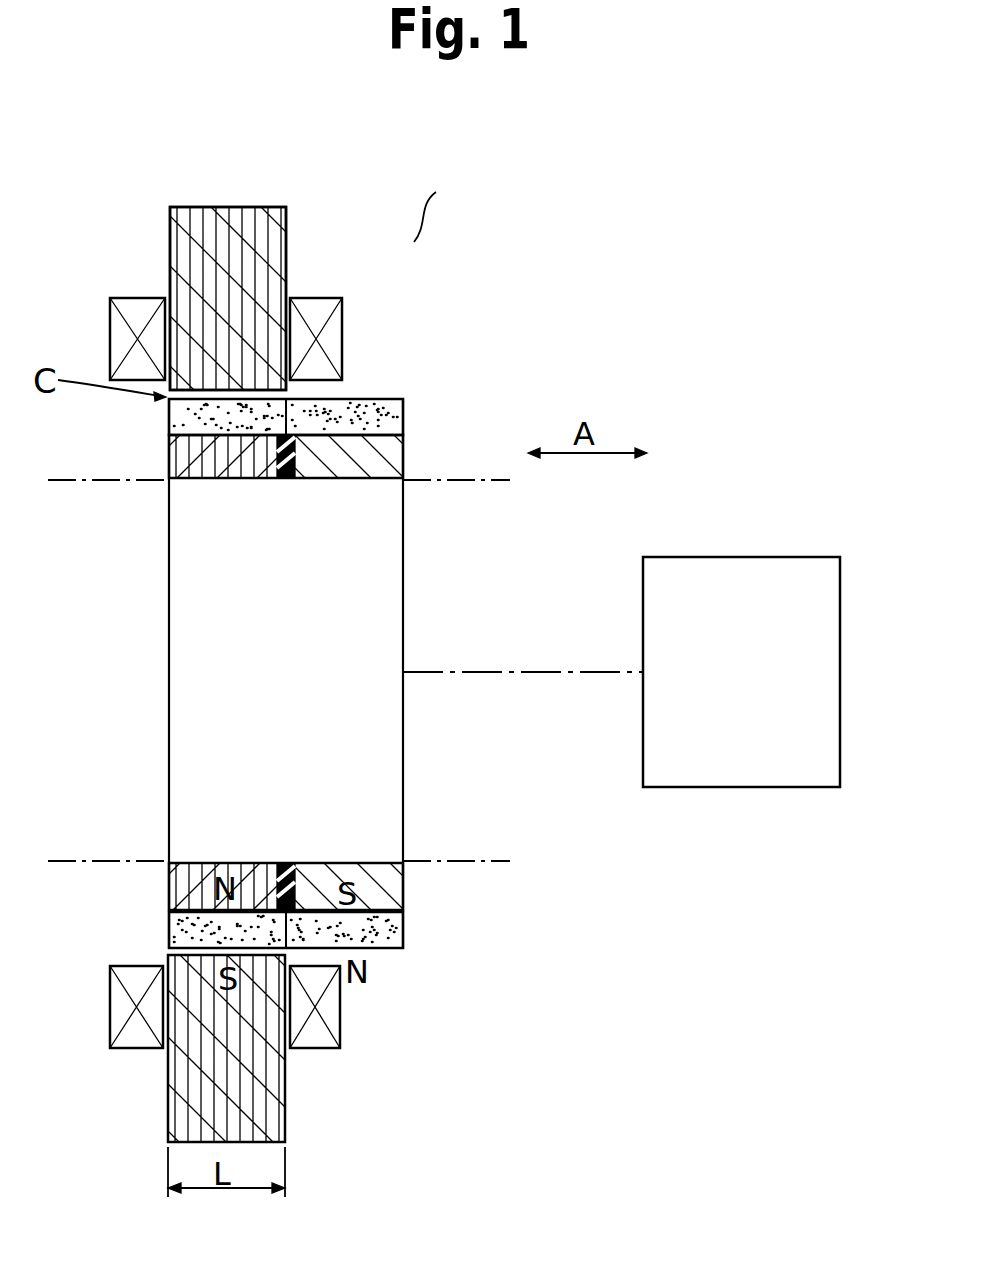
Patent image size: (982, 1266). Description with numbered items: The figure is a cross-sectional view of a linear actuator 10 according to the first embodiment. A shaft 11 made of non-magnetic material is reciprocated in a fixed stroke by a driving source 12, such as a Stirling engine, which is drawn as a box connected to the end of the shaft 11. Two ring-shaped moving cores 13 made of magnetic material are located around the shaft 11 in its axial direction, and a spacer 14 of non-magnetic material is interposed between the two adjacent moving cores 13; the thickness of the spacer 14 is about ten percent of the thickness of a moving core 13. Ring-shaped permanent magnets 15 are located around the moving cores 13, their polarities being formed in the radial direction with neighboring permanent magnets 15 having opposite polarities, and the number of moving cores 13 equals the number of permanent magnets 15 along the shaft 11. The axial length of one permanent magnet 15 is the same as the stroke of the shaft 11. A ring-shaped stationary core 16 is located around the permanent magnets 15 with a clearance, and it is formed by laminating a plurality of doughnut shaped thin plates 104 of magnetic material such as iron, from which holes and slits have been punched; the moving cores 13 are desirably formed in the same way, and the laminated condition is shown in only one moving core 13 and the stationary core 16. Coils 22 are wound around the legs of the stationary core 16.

The linear actuator 10 is at (413, 243).
The shaft 11 is at (220, 829).
The driving source 12 is at (746, 724).
The ring-shaped moving core 13 is at (215, 480).
The spacer 14 is at (285, 480).
The ring-shaped permanent magnet 15 is at (372, 410).
The ring-shaped stationary core 16 is at (284, 198).
The coil 22 is at (335, 330).
The doughnut shaped thin plate 104 is at (175, 213).